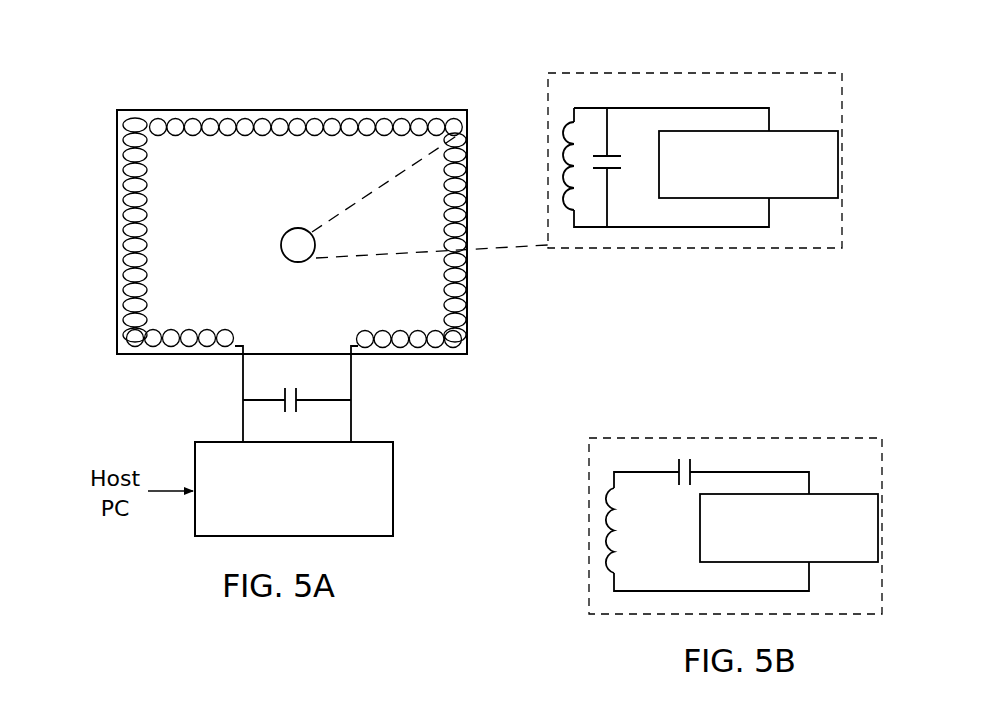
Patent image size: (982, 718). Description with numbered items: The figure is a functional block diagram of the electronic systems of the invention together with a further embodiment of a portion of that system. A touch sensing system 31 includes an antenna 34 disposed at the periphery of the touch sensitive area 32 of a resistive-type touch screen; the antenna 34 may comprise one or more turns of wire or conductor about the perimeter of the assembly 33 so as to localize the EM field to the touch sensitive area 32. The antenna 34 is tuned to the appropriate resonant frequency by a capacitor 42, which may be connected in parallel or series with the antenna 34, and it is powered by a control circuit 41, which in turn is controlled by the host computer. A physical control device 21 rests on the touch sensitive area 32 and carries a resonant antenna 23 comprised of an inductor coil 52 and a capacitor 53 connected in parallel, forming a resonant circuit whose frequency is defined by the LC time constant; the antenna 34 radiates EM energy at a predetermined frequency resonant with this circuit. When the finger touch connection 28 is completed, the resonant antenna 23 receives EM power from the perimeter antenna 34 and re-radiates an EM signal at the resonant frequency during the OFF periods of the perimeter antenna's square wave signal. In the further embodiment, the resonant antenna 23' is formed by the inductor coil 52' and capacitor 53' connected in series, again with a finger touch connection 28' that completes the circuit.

In FIG. 5A, the touch sensing system 31 is at (112, 100).
In FIG. 5A, the touch sensitive area 32 is at (188, 254).
In FIG. 5A, the assembly 33 is at (420, 110).
In FIG. 5A, the antenna 34 is at (210, 118).
In FIG. 5A, the physical control device 21 is at (298, 238).
In FIG. 5A, the control circuit 41 is at (393, 490).
In FIG. 5A, the capacitor 42 is at (283, 406).
In FIG. 5A, the resonant antenna 23 is at (677, 209).
In FIG. 5A, the inductor coil 52 is at (591, 114).
In FIG. 5A, the capacitor 53 is at (649, 209).
In FIG. 5A, the finger touch connection 28 is at (748, 103).
In FIG. 5B, the resonant antenna 23' is at (711, 554).
In FIG. 5B, the inductor coil 52' is at (633, 477).
In FIG. 5B, the capacitor 53' is at (733, 433).
In FIG. 5B, the finger touch connection 28' is at (789, 465).